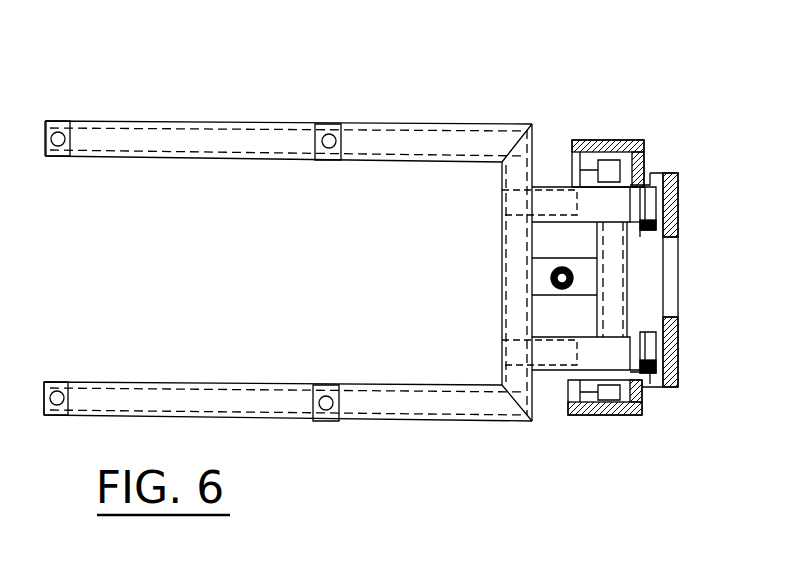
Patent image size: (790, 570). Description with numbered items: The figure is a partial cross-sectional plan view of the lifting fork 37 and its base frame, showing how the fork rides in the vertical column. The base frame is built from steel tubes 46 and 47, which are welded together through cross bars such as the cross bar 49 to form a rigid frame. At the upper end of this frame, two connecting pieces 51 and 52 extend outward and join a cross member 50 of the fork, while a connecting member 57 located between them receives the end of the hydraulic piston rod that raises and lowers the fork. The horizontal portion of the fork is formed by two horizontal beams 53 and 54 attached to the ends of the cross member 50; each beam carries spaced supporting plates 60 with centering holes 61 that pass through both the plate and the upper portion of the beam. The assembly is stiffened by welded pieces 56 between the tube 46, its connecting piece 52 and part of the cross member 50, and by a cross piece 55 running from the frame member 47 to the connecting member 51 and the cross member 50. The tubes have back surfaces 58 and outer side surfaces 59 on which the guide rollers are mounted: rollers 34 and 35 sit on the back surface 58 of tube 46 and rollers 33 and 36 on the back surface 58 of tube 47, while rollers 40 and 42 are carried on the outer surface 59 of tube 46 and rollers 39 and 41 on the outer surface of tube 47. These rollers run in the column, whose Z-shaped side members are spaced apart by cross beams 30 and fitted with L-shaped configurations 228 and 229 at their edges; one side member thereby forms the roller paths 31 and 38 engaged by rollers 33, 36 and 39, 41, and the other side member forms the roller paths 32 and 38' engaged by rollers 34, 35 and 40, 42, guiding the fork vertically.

The cross beams 30 is at (686, 280).
The roller path 31 is at (658, 362).
The roller path 32 is at (663, 205).
The guide roller 33 is at (668, 328).
The guide roller 34 is at (652, 187).
The guide roller 35 is at (657, 198).
The guide roller 36 is at (657, 336).
The lifting fork 37 is at (231, 121).
The roller path 38 is at (691, 439).
The roller path 38' is at (657, 110).
The guide roller 39 is at (655, 454).
The guide roller 41 is at (655, 454).
The guide roller 40 is at (625, 125).
The guide roller 42 is at (625, 125).
The tube 46 is at (593, 205).
The tube 47 is at (583, 370).
The cross bar 49 is at (597, 318).
The cross member 50 is at (518, 305).
The connecting piece 51 is at (552, 370).
The connecting piece 52 is at (545, 187).
The horizontal beam 53 is at (270, 400).
The horizontal beam 54 is at (118, 140).
The cross piece 55 is at (518, 362).
The welded pieces 56 is at (553, 215).
The connecting member 57 is at (555, 258).
The back surface 58 is at (645, 232).
The outer side surface 59 is at (648, 185).
The supporting plates 60 is at (52, 383).
The centering holes 61 is at (70, 383).
The L-shaped configuration 228 is at (615, 415).
The L-shaped configuration 229 is at (600, 140).